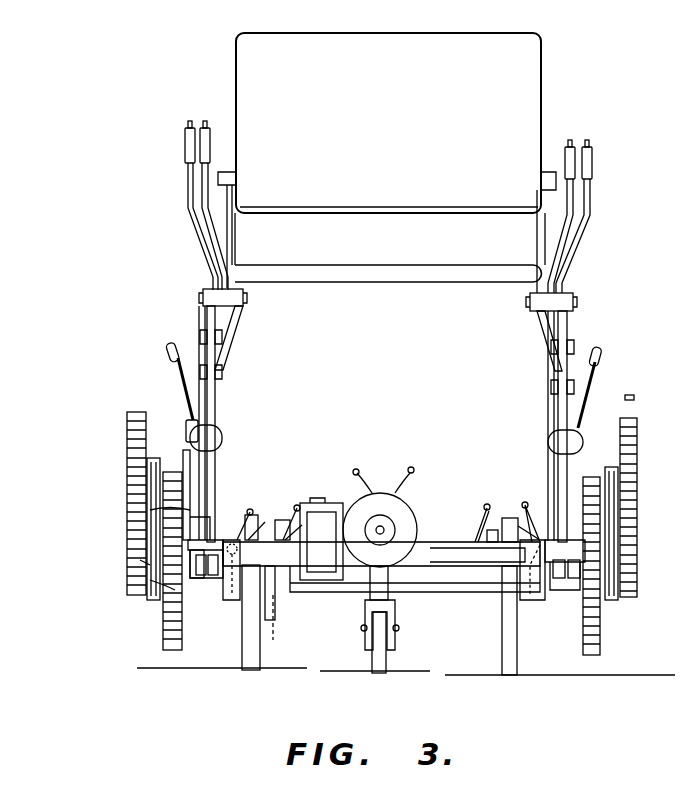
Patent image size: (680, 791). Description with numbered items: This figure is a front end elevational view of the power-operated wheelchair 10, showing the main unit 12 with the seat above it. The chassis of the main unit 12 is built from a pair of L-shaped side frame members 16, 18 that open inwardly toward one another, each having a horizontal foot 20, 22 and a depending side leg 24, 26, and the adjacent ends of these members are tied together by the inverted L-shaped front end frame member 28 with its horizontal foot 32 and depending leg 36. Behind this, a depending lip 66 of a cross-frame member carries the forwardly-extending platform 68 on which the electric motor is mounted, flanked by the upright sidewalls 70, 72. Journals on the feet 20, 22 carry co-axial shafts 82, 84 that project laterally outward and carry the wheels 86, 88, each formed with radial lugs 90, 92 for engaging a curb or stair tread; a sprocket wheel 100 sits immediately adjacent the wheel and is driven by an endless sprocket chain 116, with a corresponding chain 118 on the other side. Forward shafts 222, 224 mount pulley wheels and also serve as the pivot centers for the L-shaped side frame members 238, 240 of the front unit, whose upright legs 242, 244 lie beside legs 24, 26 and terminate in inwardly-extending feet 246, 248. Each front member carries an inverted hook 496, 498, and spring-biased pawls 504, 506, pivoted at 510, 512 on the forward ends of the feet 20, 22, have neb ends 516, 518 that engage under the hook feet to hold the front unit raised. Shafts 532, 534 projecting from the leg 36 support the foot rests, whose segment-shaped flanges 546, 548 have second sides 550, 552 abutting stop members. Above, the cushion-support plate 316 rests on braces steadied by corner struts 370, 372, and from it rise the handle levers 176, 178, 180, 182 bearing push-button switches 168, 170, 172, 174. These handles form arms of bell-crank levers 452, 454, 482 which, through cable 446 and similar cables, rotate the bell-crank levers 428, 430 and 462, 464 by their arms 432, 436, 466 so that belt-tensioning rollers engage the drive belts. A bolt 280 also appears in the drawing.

The power-operated wheelchair 10 is at (637, 327).
The main unit 12 is at (137, 388).
The side frame member 16 is at (132, 568).
The side frame member 18 is at (592, 576).
The horizontal foot 20 is at (152, 512).
The horizontal foot 22 is at (592, 497).
The depending side leg 24 is at (192, 566).
The depending side leg 26 is at (603, 575).
The front end frame member 28 is at (440, 567).
The horizontal foot 32 is at (435, 531).
The depending leg 36 is at (423, 576).
The depending extension or lip 66 is at (418, 578).
The platform 68 is at (320, 590).
The sidewall 70 is at (297, 584).
The sidewall 72 is at (460, 575).
The shaft 82 is at (150, 480).
The shaft 84 is at (585, 500).
The wheel 86 is at (128, 426).
The wheel 88 is at (630, 436).
The lugs 90 is at (130, 493).
The lugs 92 is at (610, 517).
The sprocket wheel 100 is at (166, 478).
The endless sprocket chain 116 is at (158, 452).
The endless sprocket chain 118 is at (612, 472).
The push-button switch 168 is at (192, 121).
The push-button switch 170 is at (206, 121).
The push-button switch 172 is at (572, 140).
The push-button switch 174 is at (588, 140).
The handle lever 176 is at (187, 182).
The handle lever 178 is at (210, 172).
The handle lever 180 is at (572, 192).
The handle lever 182 is at (586, 210).
The shaft 222 is at (130, 592).
The shaft 224 is at (617, 541).
The side frame member 238 is at (205, 580).
The side frame member 240 is at (562, 582).
The upright leg 242 is at (210, 566).
The upright leg 244 is at (580, 583).
The foot 246 is at (220, 577).
The foot 248 is at (555, 585).
The bolt 280 is at (215, 575).
The cushion-support plate 316 is at (442, 282).
The corner strut 370 is at (225, 332).
The corner strut 372 is at (550, 348).
The bell-crank lever 428 is at (252, 517).
The bell-crank lever 430 is at (299, 508).
The arm 432 is at (272, 504).
The arm 436 is at (295, 505).
The cable 446 is at (235, 516).
The bell-crank lever 452 is at (185, 209).
The bell-crank lever 454 is at (217, 204).
The bell-crank lever 462 is at (492, 512).
The bell-crank lever 464 is at (467, 533).
The arm 466 is at (530, 497).
The bell-crank lever 482 is at (553, 234).
The hook 496 is at (242, 605).
The hook 498 is at (507, 598).
The pawl 504 is at (223, 528).
The pawl 506 is at (545, 502).
The pivotal connection 510 is at (210, 516).
The pivotal connection 512 is at (582, 471).
The neb end 516 is at (233, 584).
The neb end 518 is at (530, 588).
The shaft 532 is at (243, 553).
The shaft 534 is at (514, 557).
The segment-shaped flange 546 is at (278, 578).
The segment-shaped flange 548 is at (482, 554).
The second side 550 is at (289, 626).
The second side 552 is at (495, 605).